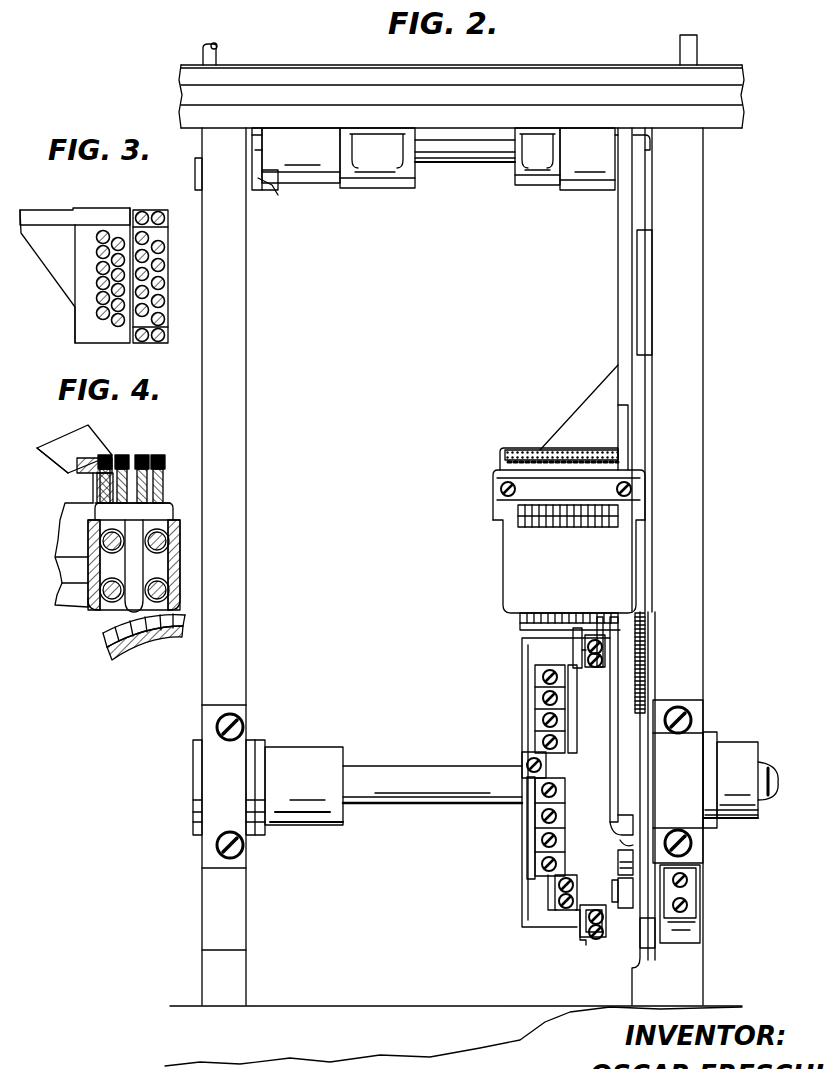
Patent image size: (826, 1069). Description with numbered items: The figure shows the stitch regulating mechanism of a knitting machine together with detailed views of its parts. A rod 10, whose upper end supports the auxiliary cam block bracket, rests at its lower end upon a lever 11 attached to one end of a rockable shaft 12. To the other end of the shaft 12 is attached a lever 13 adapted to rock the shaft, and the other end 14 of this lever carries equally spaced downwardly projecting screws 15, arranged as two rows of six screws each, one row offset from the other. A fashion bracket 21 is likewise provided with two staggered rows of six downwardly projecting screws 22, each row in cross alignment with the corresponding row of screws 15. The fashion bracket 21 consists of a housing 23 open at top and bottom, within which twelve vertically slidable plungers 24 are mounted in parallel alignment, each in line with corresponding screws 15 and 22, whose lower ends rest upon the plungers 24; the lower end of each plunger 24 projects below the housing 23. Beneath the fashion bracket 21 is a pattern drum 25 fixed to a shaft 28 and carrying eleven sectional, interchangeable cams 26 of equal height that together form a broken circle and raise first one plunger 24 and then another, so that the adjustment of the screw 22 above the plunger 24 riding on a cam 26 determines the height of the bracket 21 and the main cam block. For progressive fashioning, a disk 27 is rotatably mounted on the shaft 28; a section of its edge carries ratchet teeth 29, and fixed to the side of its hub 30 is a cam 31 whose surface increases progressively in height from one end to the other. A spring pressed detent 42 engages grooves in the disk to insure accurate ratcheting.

In FIG. 2, the rod 10 is at (222, 56).
In FIG. 2, the lever 11 is at (272, 184).
In FIG. 2, the rockable shaft 12 is at (463, 167).
In FIG. 2, the lever 13 is at (626, 292).
In FIG. 3, the lever 13 is at (57, 270).
In FIG. 4, the lever 13 is at (88, 441).
In FIG. 2, the end of lever 14 is at (510, 448).
In FIG. 3, the end of lever 14 is at (86, 337).
In FIG. 3, the screws 15 is at (113, 320).
In FIG. 4, the screws 15 is at (110, 455).
In FIG. 2, the fashion bracket 21 is at (569, 542).
In FIG. 4, the fashion bracket 21 is at (67, 598).
In FIG. 3, the screws 22 is at (162, 240).
In FIG. 4, the screws 22 is at (157, 456).
In FIG. 4, the housing 23 is at (173, 565).
In FIG. 2, the plungers 24 is at (535, 616).
In FIG. 4, the plungers 24 is at (155, 515).
In FIG. 2, the pattern drum 25 is at (528, 662).
In FIG. 4, the pattern drum 25 is at (118, 657).
In FIG. 2, the cams 26 is at (538, 721).
In FIG. 4, the cams 26 is at (108, 639).
In FIG. 2, the disk 27 is at (640, 712).
In FIG. 2, the shaft 28 is at (417, 775).
In FIG. 2, the ratchet teeth 29 is at (647, 626).
In FIG. 2, the disk hub 30 is at (627, 764).
In FIG. 2, the cam 31 is at (612, 778).
In FIG. 2, the spring pressed detent 42 is at (647, 928).